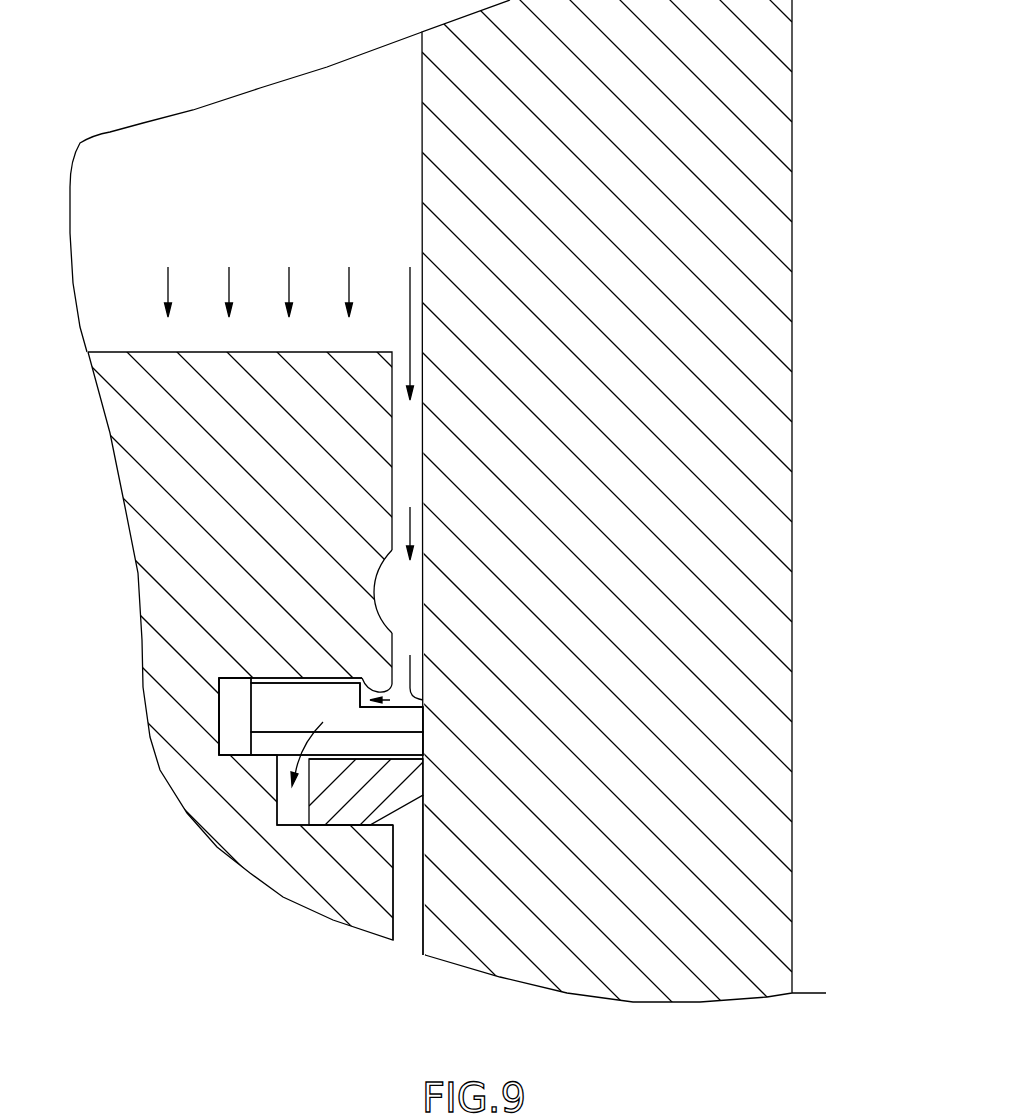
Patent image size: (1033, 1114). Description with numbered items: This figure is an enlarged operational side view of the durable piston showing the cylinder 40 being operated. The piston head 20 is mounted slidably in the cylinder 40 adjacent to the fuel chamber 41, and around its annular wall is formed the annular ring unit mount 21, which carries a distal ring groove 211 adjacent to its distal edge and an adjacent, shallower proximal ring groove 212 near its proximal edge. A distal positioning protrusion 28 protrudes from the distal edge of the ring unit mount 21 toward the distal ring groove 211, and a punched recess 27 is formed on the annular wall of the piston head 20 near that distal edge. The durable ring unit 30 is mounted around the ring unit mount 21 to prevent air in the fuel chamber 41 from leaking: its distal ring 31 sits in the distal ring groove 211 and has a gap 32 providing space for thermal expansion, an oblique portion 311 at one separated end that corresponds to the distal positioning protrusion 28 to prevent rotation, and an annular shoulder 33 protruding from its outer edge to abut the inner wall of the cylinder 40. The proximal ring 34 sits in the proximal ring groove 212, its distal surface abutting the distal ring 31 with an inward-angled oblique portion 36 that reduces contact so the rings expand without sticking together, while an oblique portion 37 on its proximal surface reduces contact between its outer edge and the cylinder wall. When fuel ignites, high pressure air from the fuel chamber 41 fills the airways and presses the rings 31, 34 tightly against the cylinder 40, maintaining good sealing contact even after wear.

The piston head 20 is at (141, 460).
The ring unit mount 21 is at (272, 680).
The recess 27 is at (383, 565).
The distal positioning protrusion 28 is at (367, 688).
The distal ring groove 211 is at (232, 734).
The proximal ring groove 212 is at (292, 812).
The durable ring unit 30 is at (433, 719).
The distal ring 31 is at (424, 744).
The gap 32 is at (407, 738).
The shoulder 33 is at (422, 688).
The proximal ring 34 is at (412, 786).
The oblique portion of the distal surface of the proximal ring 36 is at (333, 764).
The oblique portion of the proximal surface of the proximal ring 37 is at (405, 797).
The cylinder 40 is at (752, 545).
The fuel chamber 41 is at (289, 98).
The oblique portion 311 is at (260, 702).